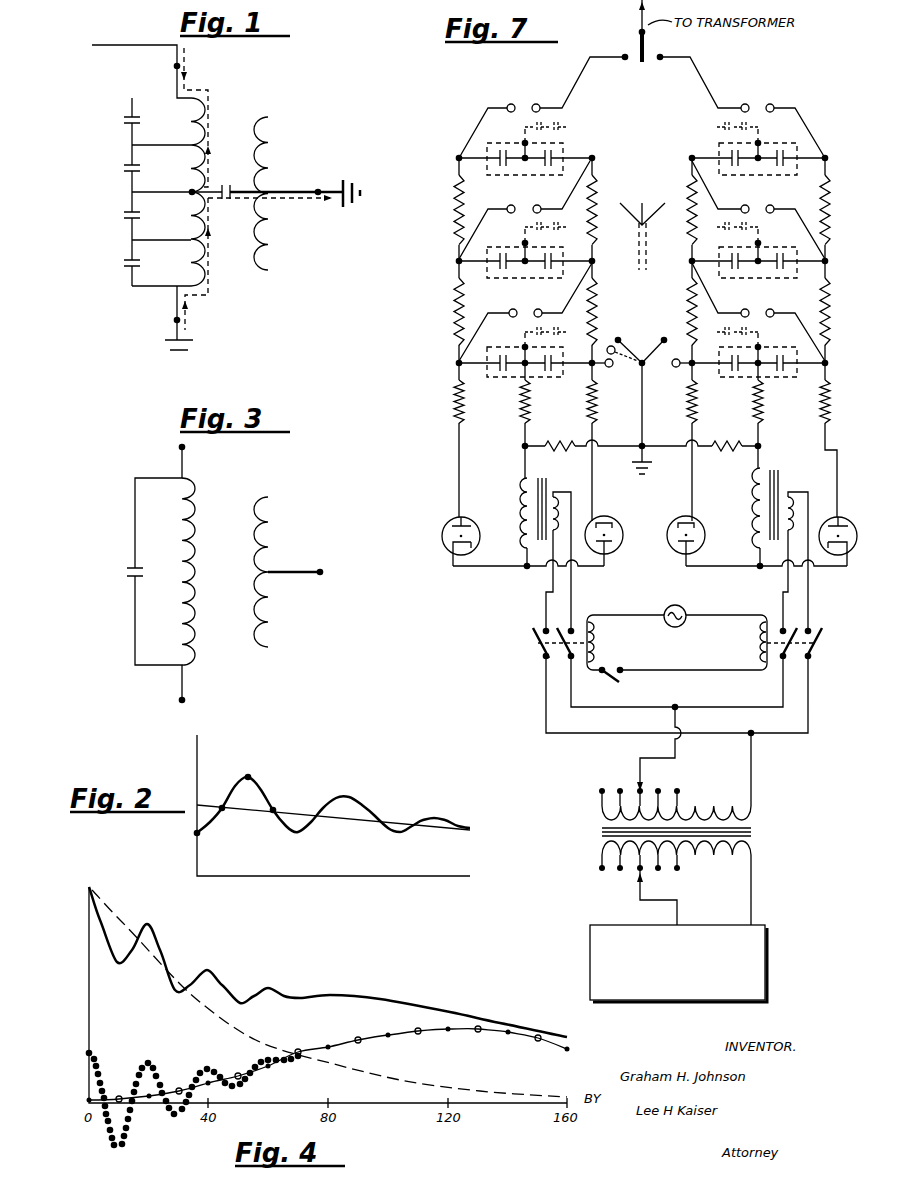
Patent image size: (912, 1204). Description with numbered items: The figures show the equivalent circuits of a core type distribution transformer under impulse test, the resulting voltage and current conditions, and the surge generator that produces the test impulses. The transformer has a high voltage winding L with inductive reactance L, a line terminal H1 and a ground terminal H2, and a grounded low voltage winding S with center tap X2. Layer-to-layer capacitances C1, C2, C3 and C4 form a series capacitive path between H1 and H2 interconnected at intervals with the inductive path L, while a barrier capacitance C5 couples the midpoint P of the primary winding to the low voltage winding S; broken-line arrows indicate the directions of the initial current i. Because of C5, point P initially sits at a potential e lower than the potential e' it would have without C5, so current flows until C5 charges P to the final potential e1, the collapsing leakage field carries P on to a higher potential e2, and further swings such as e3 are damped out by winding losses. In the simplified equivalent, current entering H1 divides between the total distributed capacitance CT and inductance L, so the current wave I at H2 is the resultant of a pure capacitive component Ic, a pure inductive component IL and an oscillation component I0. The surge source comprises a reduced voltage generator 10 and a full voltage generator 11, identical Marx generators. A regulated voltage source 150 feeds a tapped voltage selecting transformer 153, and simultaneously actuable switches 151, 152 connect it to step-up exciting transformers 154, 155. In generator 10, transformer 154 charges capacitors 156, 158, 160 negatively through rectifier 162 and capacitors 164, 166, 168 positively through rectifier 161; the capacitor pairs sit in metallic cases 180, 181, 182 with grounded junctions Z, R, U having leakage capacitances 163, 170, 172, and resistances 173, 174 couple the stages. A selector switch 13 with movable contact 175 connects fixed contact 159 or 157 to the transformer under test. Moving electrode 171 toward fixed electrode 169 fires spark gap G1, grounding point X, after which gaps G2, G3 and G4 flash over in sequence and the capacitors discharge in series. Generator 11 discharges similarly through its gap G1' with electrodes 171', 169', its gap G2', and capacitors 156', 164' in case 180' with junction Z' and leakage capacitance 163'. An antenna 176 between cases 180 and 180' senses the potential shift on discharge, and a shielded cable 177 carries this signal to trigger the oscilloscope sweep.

In FIG. 1, the line terminal H1 is at (174, 66).
In FIG. 3, the line terminal H1 is at (186, 449).
In FIG. 1, the ground terminal H2 is at (174, 321).
In FIG. 3, the ground terminal H2 is at (186, 699).
In FIG. 1, the layer-to-layer capacitance C1 is at (124, 121).
In FIG. 1, the layer-to-layer capacitance C2 is at (124, 169).
In FIG. 1, the layer-to-layer capacitance C3 is at (124, 216).
In FIG. 1, the layer-to-layer capacitance C4 is at (124, 264).
In FIG. 1, the barrier capacitance C5 is at (228, 204).
In FIG. 3, the total distributed capacitance CT is at (127, 572).
In FIG. 1, the high voltage winding L is at (205, 137).
In FIG. 3, the high voltage winding L is at (203, 524).
In FIG. 1, the low voltage winding S is at (270, 133).
In FIG. 3, the low voltage winding S is at (271, 522).
In FIG. 7, the low voltage winding S is at (594, 261).
In FIG. 1, the midpoint of primary winding P is at (189, 196).
In FIG. 1, the center tap X2 is at (317, 189).
In FIG. 3, the center tap X2 is at (322, 568).
In FIG. 1, the current path i is at (296, 199).
In FIG. 2, the initial potential e is at (185, 835).
In FIG. 2, the potential without barrier capacitance e' is at (210, 793).
In FIG. 2, the final potential e1 is at (223, 811).
In FIG. 2, the higher potential e2 is at (250, 775).
In FIG. 2, the voltage point e3 is at (275, 808).
In FIG. 4, the current wave I is at (374, 994).
In FIG. 4, the oscillation component I0 is at (150, 1062).
In FIG. 4, the pure inductive component IL is at (196, 1086).
In FIG. 4, the pure capacitive component Ic is at (472, 1084).
In FIG. 7, the reduced voltage generator 10 is at (436, 412).
In FIG. 7, the full voltage generator 11 is at (859, 412).
In FIG. 7, the selector switch 13 is at (622, 43).
In FIG. 7, the voltage regulated power source 150 is at (766, 979).
In FIG. 7, the switching device 151 is at (532, 641).
In FIG. 7, the switching device 152 is at (822, 641).
In FIG. 7, the voltage selecting transformer 153 is at (756, 836).
In FIG. 7, the step-up exciting transformer 154 is at (525, 508).
In FIG. 7, the step-up exciting transformer 155 is at (760, 508).
In FIG. 7, the capacitor 156 is at (498, 378).
In FIG. 7, the capacitor 156' is at (792, 378).
In FIG. 7, the fixed contact 157 is at (663, 62).
In FIG. 7, the capacitor 158 is at (523, 276).
In FIG. 7, the fixed contact 159 is at (623, 62).
In FIG. 7, the capacitor 160 is at (523, 168).
In FIG. 7, the rectifier 161 is at (612, 556).
In FIG. 7, the rectifier 162 is at (455, 563).
In FIG. 7, the leakage capacitance 163 is at (530, 336).
In FIG. 7, the trimmer capacitor 163' is at (765, 332).
In FIG. 7, the capacitor 164 is at (560, 378).
In FIG. 7, the capacitor 164' is at (721, 378).
In FIG. 7, the capacitor 166 is at (552, 276).
In FIG. 7, the capacitor 168 is at (548, 170).
In FIG. 7, the fixed electrode 169 is at (616, 395).
In FIG. 7, the fixed electrode 169' is at (665, 395).
In FIG. 7, the leakage capacitance 170 is at (524, 226).
In FIG. 7, the movable electrode 171 is at (623, 340).
In FIG. 7, the movable electrode 171' is at (661, 340).
In FIG. 7, the leakage capacitance 172 is at (524, 124).
In FIG. 7, the resistance 173 is at (456, 292).
In FIG. 7, the resistance 174 is at (598, 292).
In FIG. 7, the movable contact 175 is at (645, 56).
In FIG. 7, the antenna 176 is at (644, 208).
In FIG. 7, the shielded cable 177 is at (648, 241).
In FIG. 7, the metallic case 180 is at (456, 376).
In FIG. 7, the metallic case 180' is at (830, 376).
In FIG. 7, the metallic case 181 is at (490, 272).
In FIG. 7, the metallic case 182 is at (490, 172).
In FIG. 7, the spark gap G1 is at (615, 365).
In FIG. 7, the spark gap G1' is at (672, 372).
In FIG. 7, the spark gap G2 is at (525, 312).
In FIG. 7, the contact G2' is at (758, 312).
In FIG. 7, the spark gap G3 is at (508, 206).
In FIG. 7, the spark gap G4 is at (511, 103).
In FIG. 7, the junction point R is at (525, 262).
In FIG. 7, the junction point U is at (525, 159).
In FIG. 7, the point X is at (592, 362).
In FIG. 7, the junction point Z is at (525, 364).
In FIG. 7, the capacitor unit Z' is at (758, 372).